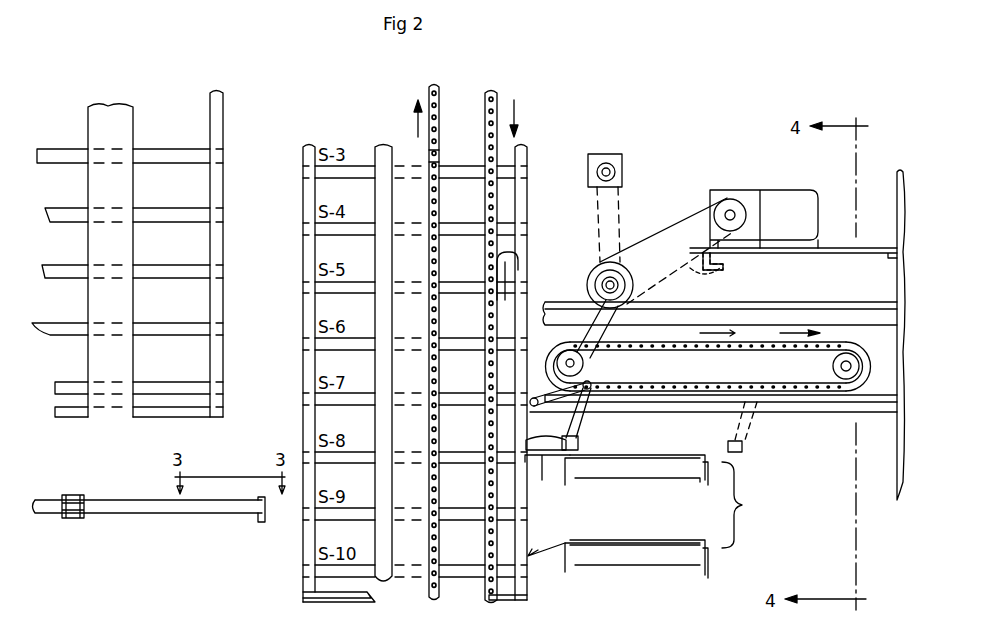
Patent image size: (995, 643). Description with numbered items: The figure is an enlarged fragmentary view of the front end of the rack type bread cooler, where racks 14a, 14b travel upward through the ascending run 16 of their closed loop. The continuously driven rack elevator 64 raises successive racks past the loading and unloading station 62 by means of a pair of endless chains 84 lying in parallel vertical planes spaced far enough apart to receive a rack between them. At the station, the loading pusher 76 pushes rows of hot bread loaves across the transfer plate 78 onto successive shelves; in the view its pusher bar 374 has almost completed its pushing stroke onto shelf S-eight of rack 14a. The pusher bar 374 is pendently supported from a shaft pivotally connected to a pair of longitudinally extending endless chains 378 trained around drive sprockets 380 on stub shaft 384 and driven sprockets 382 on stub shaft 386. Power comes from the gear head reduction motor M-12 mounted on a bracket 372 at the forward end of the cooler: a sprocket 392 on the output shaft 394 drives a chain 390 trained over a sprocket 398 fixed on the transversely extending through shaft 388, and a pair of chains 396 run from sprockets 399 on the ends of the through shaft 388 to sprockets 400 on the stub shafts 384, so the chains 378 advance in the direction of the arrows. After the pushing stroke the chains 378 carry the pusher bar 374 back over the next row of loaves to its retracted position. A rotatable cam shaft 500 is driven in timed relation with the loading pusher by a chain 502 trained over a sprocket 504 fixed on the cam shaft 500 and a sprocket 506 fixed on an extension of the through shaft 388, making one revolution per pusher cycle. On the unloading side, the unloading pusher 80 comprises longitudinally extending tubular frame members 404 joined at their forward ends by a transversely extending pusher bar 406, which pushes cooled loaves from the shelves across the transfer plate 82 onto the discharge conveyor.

The rack 14b is at (223, 118).
The rack 14a is at (300, 350).
The ascending run 16 is at (430, 84).
The rack elevator 64 is at (496, 97).
The endless chains 84 is at (428, 157).
The cam shaft 500 is at (606, 168).
The sprocket 504 is at (614, 168).
The chain 502 is at (596, 208).
The sprocket 506 is at (620, 280).
The sprocket 398 is at (600, 275).
The chains 396 is at (590, 305).
The sprockets 399 is at (592, 302).
The sprockets 400 is at (604, 334).
The through shaft 388 is at (618, 288).
The sprocket 392 is at (722, 205).
The output shaft 394 is at (734, 210).
The gear head reduction motor M-12 is at (790, 200).
The chain 390 is at (722, 262).
The bracket 372 is at (863, 254).
The stub shaft 384 is at (576, 366).
The drive sprockets 380 is at (588, 377).
The stub shaft 386 is at (840, 366).
The driven sprockets 382 is at (840, 372).
The pusher bar 374 is at (583, 447).
The endless chains 378 is at (690, 402).
The loading pusher 76 is at (587, 456).
The transfer plate 78 is at (555, 445).
The transfer plate 82 is at (560, 546).
The loading and unloading station 62 is at (669, 516).
The unloading pusher 80 is at (50, 490).
The tubular frame members 404 is at (180, 516).
The pusher bar 406 is at (258, 520).